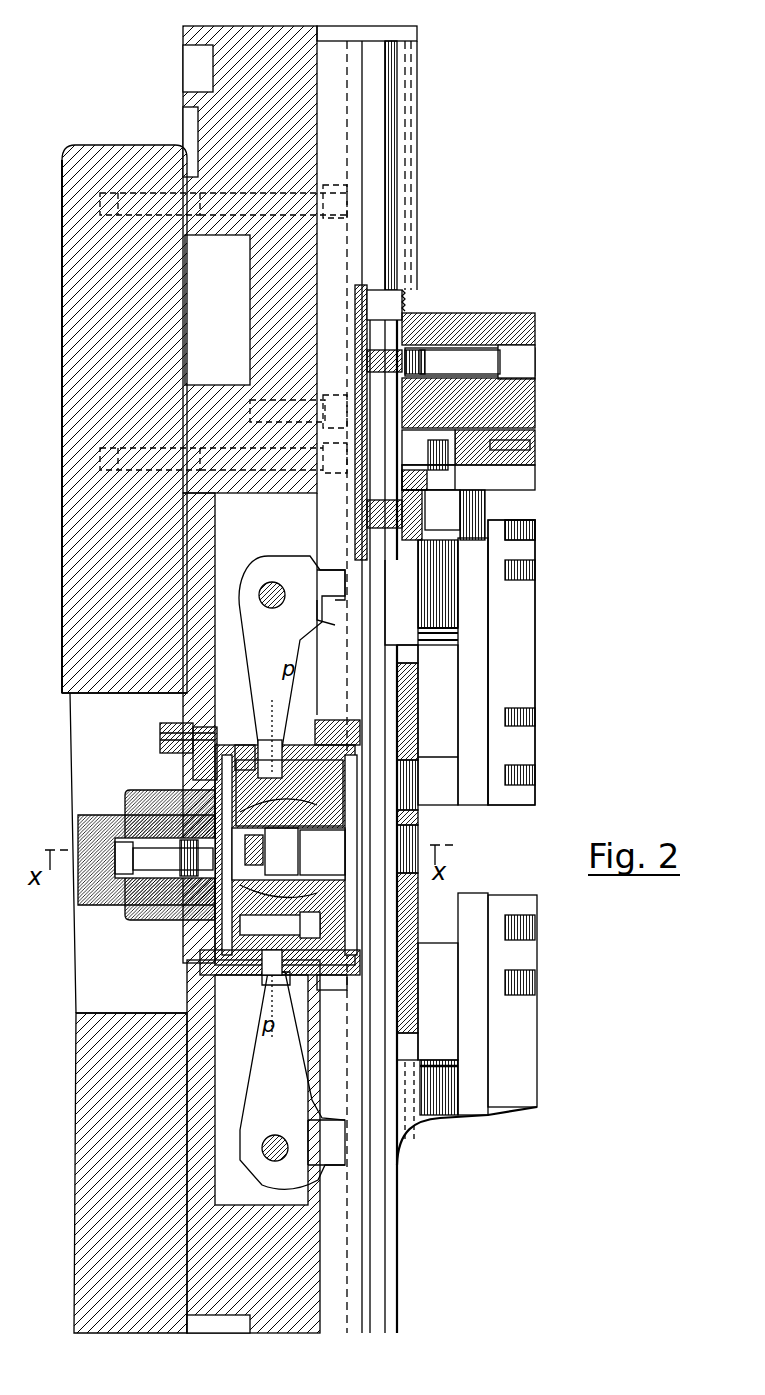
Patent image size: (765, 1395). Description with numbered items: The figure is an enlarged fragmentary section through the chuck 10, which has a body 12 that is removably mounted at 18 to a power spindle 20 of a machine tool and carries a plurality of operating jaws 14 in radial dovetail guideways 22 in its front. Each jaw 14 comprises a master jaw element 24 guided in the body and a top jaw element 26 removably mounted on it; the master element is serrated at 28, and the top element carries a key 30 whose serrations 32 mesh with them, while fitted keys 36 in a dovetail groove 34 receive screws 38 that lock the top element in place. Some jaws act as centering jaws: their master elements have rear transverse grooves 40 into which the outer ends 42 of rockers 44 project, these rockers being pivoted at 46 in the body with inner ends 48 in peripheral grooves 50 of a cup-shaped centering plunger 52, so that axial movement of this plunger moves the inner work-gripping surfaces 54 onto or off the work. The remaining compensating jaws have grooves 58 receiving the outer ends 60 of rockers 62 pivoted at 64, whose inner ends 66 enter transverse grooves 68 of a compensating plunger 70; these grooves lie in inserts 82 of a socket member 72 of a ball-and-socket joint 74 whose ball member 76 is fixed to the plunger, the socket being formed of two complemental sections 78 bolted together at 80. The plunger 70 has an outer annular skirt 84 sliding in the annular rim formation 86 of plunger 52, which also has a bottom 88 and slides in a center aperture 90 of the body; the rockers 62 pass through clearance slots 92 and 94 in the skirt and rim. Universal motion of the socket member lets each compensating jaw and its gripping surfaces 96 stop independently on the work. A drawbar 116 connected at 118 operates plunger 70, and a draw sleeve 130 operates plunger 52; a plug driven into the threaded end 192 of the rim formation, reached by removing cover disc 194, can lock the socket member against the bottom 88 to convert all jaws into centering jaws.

The chuck 10 is at (560, 240).
The chuck body 12 is at (240, 42).
The operating jaws 14 is at (538, 318).
The mount of the chuck body to the spindle 18 is at (330, 185).
The power spindle 20 is at (110, 142).
The radial guideways 22 is at (372, 40).
The master jaw element 24 is at (397, 255).
The top jaw element 26 is at (505, 312).
The serrations 28 is at (395, 300).
The key 30 is at (430, 440).
The serrations of the key 32 is at (405, 480).
The longitudinal groove 34 is at (358, 290).
The fitted keys 36 is at (357, 350).
The screws 38 is at (515, 366).
The transverse grooves 40 is at (338, 1128).
The outer ends of rockers 42 is at (338, 1170).
The rockers 44 is at (258, 1097).
The pivot mount of rockers 46 is at (268, 1160).
The inner ends of rockers 48 is at (262, 985).
The peripheral grooves 50 is at (278, 978).
The centering plunger 52 is at (208, 968).
The inner work-gripping surfaces 54 is at (530, 537).
The transverse grooves 58 is at (340, 575).
The outer ends of rockers 60 is at (328, 612).
The rockers 62 is at (255, 640).
The pivot mount of rockers 64 is at (272, 582).
The inner ends of rockers 66 is at (302, 760).
The transverse grooves 68 is at (272, 740).
The compensating plunger 70 is at (345, 820).
The socket member 72 is at (350, 770).
The ball-and-socket joint 74 is at (320, 832).
The ball member 76 is at (290, 820).
The complemental sections 78 is at (262, 830).
The bolts 80 is at (320, 945).
The inserts 82 is at (205, 755).
The outer annular skirt 84 is at (330, 990).
The annular rim formation 86 is at (328, 720).
The bottom 88 is at (160, 748).
The center aperture 90 is at (165, 740).
The clearance slots 92 is at (250, 745).
The clearance slots 94 is at (268, 745).
The inner work-gripping surfaces 96 is at (520, 448).
The drawbar 116 is at (92, 830).
The connection of drawbar to compensating plunger 118 is at (189, 858).
The draw sleeve 130 is at (115, 870).
The threaded end 192 is at (412, 925).
The cover disc 194 is at (418, 948).